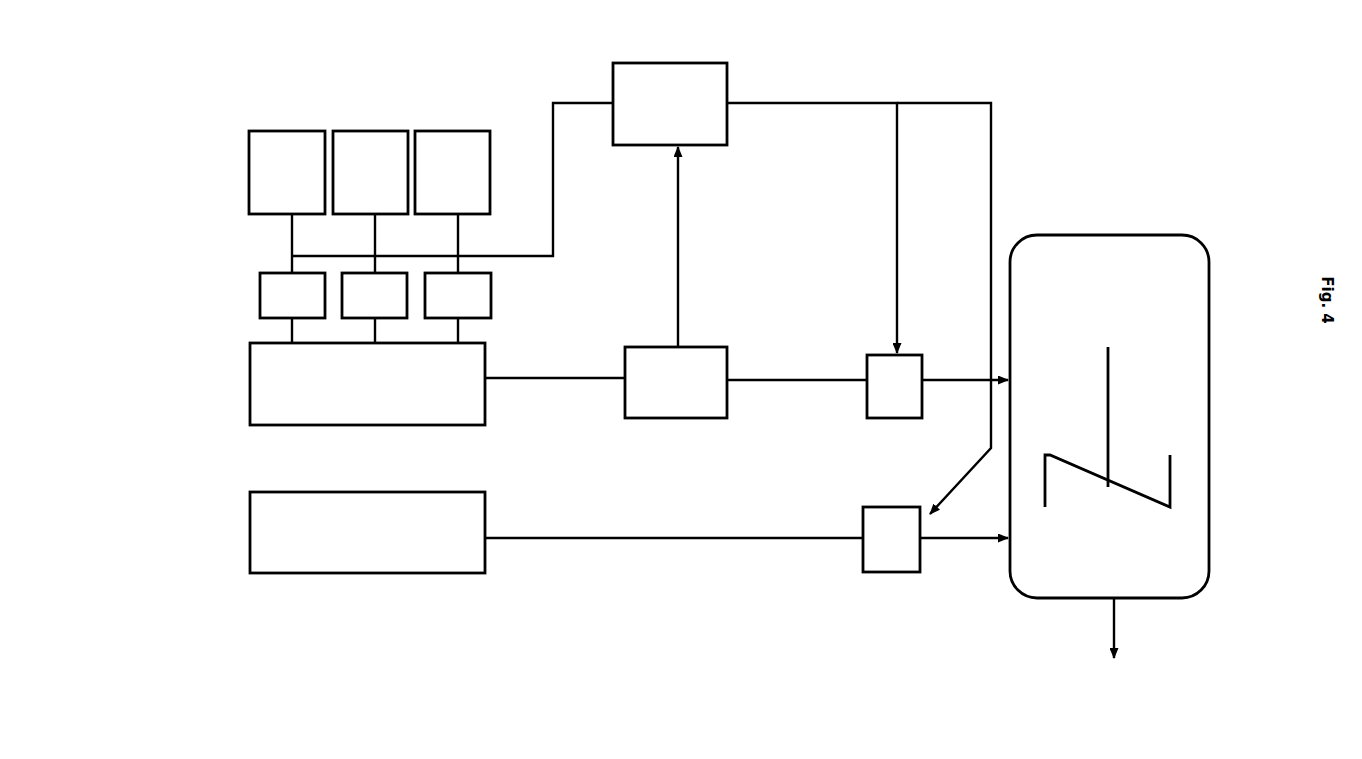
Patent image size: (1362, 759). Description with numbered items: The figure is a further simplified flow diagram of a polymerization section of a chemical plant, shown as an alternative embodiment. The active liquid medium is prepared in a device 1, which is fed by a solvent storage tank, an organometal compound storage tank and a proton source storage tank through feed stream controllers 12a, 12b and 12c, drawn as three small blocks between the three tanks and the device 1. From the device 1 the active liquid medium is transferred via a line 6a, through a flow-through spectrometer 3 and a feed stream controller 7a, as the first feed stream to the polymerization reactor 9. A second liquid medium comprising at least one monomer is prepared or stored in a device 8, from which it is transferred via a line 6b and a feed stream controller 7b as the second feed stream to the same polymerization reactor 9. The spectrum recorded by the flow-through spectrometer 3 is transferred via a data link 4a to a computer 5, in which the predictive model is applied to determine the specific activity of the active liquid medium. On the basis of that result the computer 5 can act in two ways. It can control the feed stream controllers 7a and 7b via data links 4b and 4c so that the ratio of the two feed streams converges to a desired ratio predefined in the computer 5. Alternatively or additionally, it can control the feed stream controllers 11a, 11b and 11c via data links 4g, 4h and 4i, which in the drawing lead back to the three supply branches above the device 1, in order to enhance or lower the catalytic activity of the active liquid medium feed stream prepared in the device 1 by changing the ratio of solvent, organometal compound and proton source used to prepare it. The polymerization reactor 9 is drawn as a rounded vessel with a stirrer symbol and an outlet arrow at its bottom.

The device 1 is at (367, 384).
The flow-through spectrometer 3 is at (676, 382).
The computer 5 is at (670, 104).
The device 8 is at (367, 532).
The polymerization reactor 9 is at (1109, 446).
The feed stream controller 7a is at (937, 386).
The feed stream controller 7b is at (935, 539).
The feed stream controller 11a is at (286, 238).
The feed stream controller 11b is at (382, 246).
The feed stream controller 11c is at (466, 246).
The feed stream controller 12a is at (292, 308).
The feed stream controller 12b is at (374, 308).
The feed stream controller 12c is at (458, 308).
The data link 4a is at (690, 213).
The data link 4b is at (889, 220).
The data link 4c is at (986, 213).
The data link 4g is at (342, 255).
The data link 4h is at (392, 271).
The data link 4i is at (475, 271).
The line 6a is at (755, 390).
The line 6b is at (657, 546).